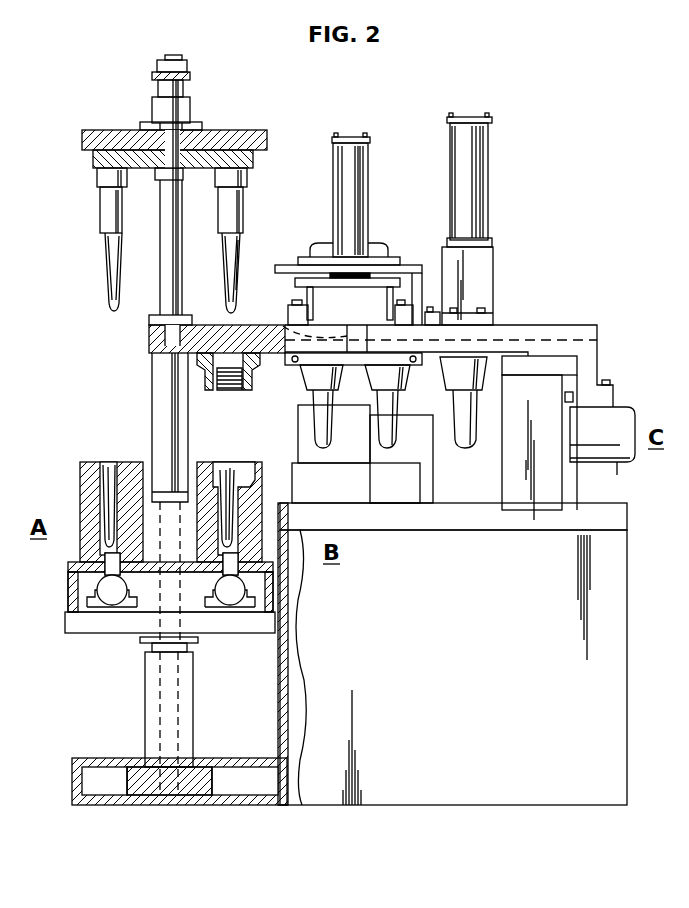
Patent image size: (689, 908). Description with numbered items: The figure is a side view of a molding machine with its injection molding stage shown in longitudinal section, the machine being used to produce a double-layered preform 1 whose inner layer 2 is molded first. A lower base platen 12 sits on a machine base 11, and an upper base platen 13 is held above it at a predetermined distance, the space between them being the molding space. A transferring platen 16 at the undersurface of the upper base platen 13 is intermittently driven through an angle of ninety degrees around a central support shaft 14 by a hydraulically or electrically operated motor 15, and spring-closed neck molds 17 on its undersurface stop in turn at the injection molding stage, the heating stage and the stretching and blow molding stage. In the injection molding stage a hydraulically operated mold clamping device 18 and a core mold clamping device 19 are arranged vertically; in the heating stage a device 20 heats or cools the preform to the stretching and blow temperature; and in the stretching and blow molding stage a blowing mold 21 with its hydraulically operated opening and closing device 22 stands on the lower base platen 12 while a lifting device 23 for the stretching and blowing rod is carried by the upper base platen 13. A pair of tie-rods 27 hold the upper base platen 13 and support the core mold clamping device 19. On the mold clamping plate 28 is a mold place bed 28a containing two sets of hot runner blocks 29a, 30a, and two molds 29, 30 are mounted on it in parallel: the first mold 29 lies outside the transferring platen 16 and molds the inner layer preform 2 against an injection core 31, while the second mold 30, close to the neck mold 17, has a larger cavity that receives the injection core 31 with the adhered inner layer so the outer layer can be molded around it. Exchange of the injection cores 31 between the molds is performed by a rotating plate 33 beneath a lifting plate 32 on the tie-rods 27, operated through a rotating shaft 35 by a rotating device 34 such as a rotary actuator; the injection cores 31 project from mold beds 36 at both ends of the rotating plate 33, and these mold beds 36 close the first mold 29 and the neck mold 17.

The double-layered preform 1 is at (465, 434).
The inner layer preform 2 is at (237, 262).
The machine base 11 is at (610, 678).
The lower base platen 12 is at (611, 522).
The upper base platen 13 is at (515, 336).
The central support shaft 14 is at (287, 324).
The motor 15 is at (378, 254).
The transferring platen 16 is at (273, 348).
The neck mold 17 is at (203, 373).
The mold clamping device 18 is at (150, 712).
The core mold clamping device 19 is at (133, 130).
The heating device 20 is at (398, 282).
The blowing mold 21 is at (531, 493).
The opening and closing device 22 is at (620, 417).
The lifting device 23 is at (467, 215).
The tie-rod 27 is at (170, 408).
The mold clamping plate 28 is at (125, 630).
The mold place bed 28a is at (72, 568).
The first mold 29 is at (92, 487).
The hot runner block 29a is at (110, 600).
The second mold 30 is at (259, 488).
The hot runner block 30a is at (230, 600).
The injection core 31 is at (112, 268).
The lifting plate 32 is at (90, 140).
The rotating plate 33 is at (103, 158).
The rotating device 34 is at (183, 112).
The rotating shaft 35 is at (163, 160).
The mold bed 36 is at (108, 208).